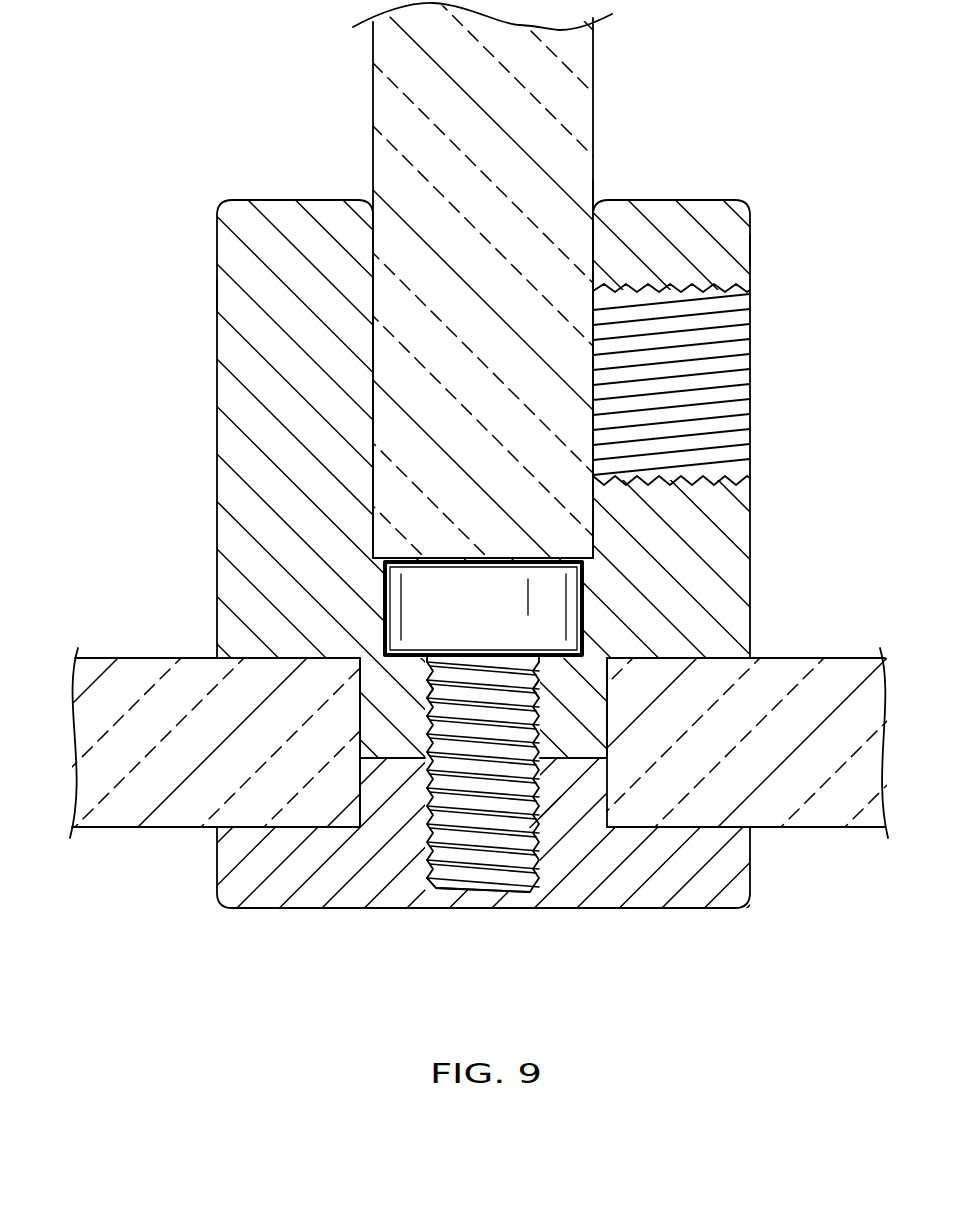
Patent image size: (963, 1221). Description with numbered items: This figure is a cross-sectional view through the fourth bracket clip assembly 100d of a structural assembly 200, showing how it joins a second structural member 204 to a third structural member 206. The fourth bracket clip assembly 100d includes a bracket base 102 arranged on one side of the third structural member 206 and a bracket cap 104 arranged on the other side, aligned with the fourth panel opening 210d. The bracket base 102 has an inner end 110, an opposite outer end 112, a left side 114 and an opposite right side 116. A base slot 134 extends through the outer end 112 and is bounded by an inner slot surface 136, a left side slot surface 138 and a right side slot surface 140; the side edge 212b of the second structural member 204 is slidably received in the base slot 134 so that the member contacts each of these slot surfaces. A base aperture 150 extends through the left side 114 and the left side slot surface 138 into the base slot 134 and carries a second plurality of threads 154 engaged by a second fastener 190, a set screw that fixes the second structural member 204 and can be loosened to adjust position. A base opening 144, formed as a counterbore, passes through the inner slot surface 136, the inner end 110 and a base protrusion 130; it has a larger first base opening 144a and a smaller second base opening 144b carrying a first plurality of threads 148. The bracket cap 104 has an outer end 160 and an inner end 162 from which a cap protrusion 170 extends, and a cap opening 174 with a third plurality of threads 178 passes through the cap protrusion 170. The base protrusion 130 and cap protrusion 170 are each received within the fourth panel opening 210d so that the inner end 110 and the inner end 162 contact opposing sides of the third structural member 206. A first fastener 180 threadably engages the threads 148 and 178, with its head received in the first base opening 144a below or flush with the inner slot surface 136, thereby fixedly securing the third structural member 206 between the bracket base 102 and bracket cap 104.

The structural assembly 200 is at (205, 62).
The fourth bracket clip assembly 100d is at (243, 160).
The second structural member 204 is at (393, 115).
The bracket base 102 is at (243, 225).
The right side 116 is at (217, 292).
The right side slot surface 140 is at (373, 243).
The outer end 112 is at (702, 198).
The left side 114 is at (752, 247).
The base slot 134 is at (594, 192).
The left side slot surface 138 is at (595, 252).
The second fastener 190 is at (720, 393).
The base aperture 150 is at (758, 304).
The second plurality of threads 154 is at (712, 300).
The side edge 212b is at (530, 557).
The base opening 144 is at (394, 548).
The inner slot surface 136 is at (373, 558).
The first fastener 180 is at (553, 597).
The first base opening 144a is at (378, 597).
The base protrusion 130 is at (387, 740).
The first plurality of threads 148 is at (428, 700).
The second base opening 144b is at (542, 698).
The cap opening 174 is at (482, 890).
The third plurality of threads 178 is at (430, 884).
The inner end 110 is at (237, 656).
The third structural member 206 is at (845, 675).
The bracket cap 104 is at (237, 885).
The cap protrusion 170 is at (572, 805).
The inner end 162 is at (708, 830).
The outer end 160 is at (645, 912).
The fourth panel opening 210d is at (360, 826).